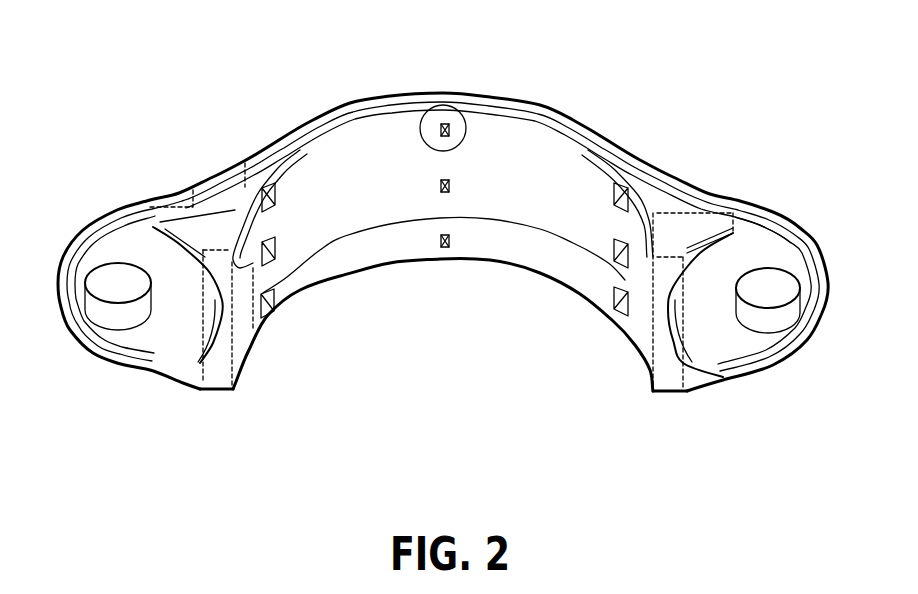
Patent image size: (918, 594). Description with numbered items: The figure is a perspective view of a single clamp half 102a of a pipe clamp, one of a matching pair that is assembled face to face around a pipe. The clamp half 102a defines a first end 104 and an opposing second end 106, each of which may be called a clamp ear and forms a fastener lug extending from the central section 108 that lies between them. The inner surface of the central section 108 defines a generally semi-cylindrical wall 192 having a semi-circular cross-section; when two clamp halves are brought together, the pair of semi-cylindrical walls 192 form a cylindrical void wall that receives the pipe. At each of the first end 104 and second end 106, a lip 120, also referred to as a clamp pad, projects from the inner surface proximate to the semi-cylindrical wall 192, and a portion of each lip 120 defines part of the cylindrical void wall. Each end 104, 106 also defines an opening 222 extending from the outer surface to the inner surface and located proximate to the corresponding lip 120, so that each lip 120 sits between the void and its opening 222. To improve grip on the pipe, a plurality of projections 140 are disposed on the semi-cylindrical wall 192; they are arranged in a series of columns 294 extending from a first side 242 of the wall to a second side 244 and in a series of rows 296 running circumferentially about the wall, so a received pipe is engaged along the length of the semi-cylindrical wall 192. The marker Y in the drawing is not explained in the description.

The clamp half 102a is at (259, 108).
The first end 104 is at (128, 203).
The second end 106 is at (778, 210).
The central section 108 is at (580, 113).
The lip 120 is at (218, 376).
The projections 140 is at (622, 300).
The semi-cylindrical wall 192 is at (368, 150).
The opening 222 is at (117, 278).
The first side 242 is at (504, 112).
The second side 244 is at (331, 283).
The columns 294 is at (234, 258).
The rows 296 is at (441, 218).
The axis marker Y is at (441, 105).